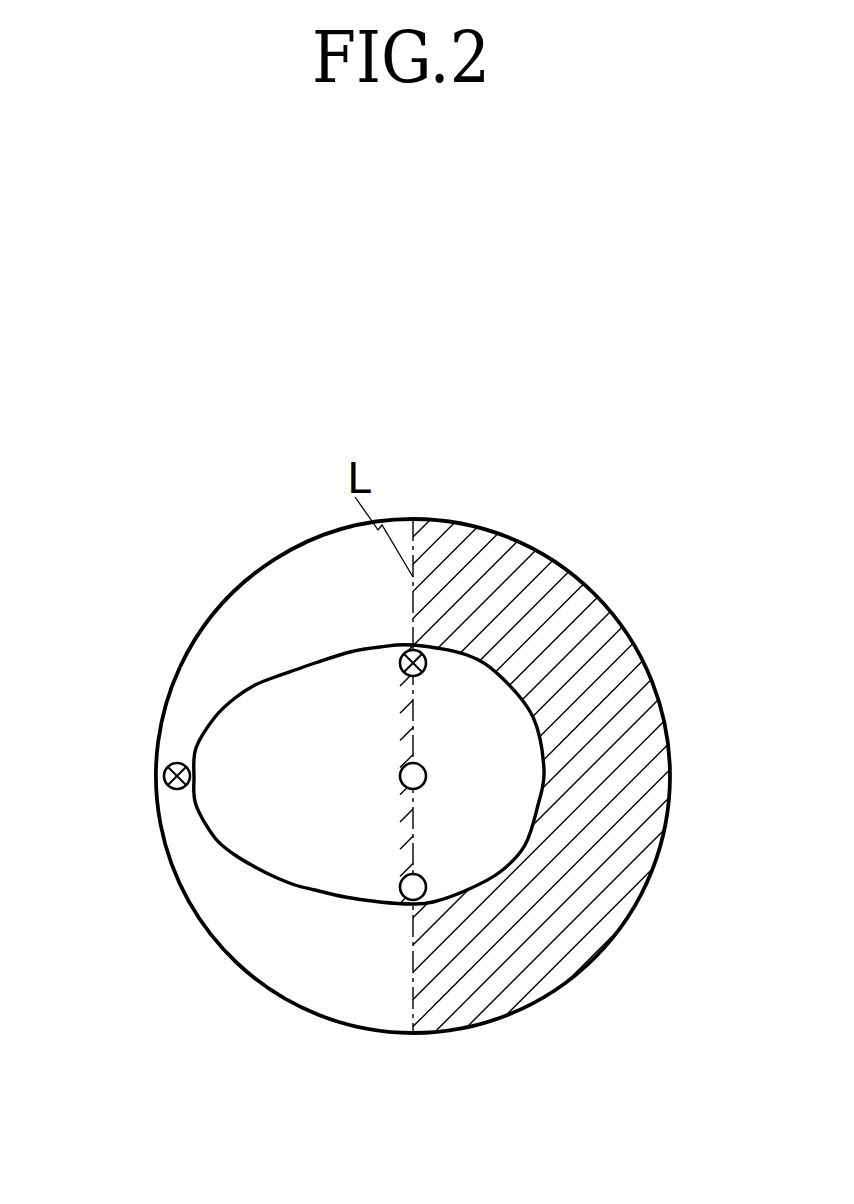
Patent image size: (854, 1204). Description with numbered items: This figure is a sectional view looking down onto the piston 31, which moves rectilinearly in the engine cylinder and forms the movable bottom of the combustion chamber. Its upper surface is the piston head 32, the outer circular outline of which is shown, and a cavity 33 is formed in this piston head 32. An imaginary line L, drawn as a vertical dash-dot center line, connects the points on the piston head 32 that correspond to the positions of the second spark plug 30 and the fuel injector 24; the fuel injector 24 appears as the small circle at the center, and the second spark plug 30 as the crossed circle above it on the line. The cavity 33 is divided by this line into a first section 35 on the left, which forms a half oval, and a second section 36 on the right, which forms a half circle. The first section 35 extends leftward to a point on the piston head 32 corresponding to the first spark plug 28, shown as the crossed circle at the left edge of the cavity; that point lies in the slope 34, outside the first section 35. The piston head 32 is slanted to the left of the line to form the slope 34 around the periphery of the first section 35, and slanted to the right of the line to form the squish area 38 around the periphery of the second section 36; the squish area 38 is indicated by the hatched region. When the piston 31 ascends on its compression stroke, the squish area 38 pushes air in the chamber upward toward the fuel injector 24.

The fuel injector 24 is at (342, 621).
The first spark plug 28 is at (125, 728).
The second spark plug 30 is at (471, 563).
The piston 31 is at (325, 1052).
The piston head 32 is at (162, 763).
The cavity 33 is at (349, 839).
The slope 34 is at (292, 582).
The first section 35 is at (239, 780).
The second section 36 is at (545, 732).
The squish area 38 is at (575, 776).